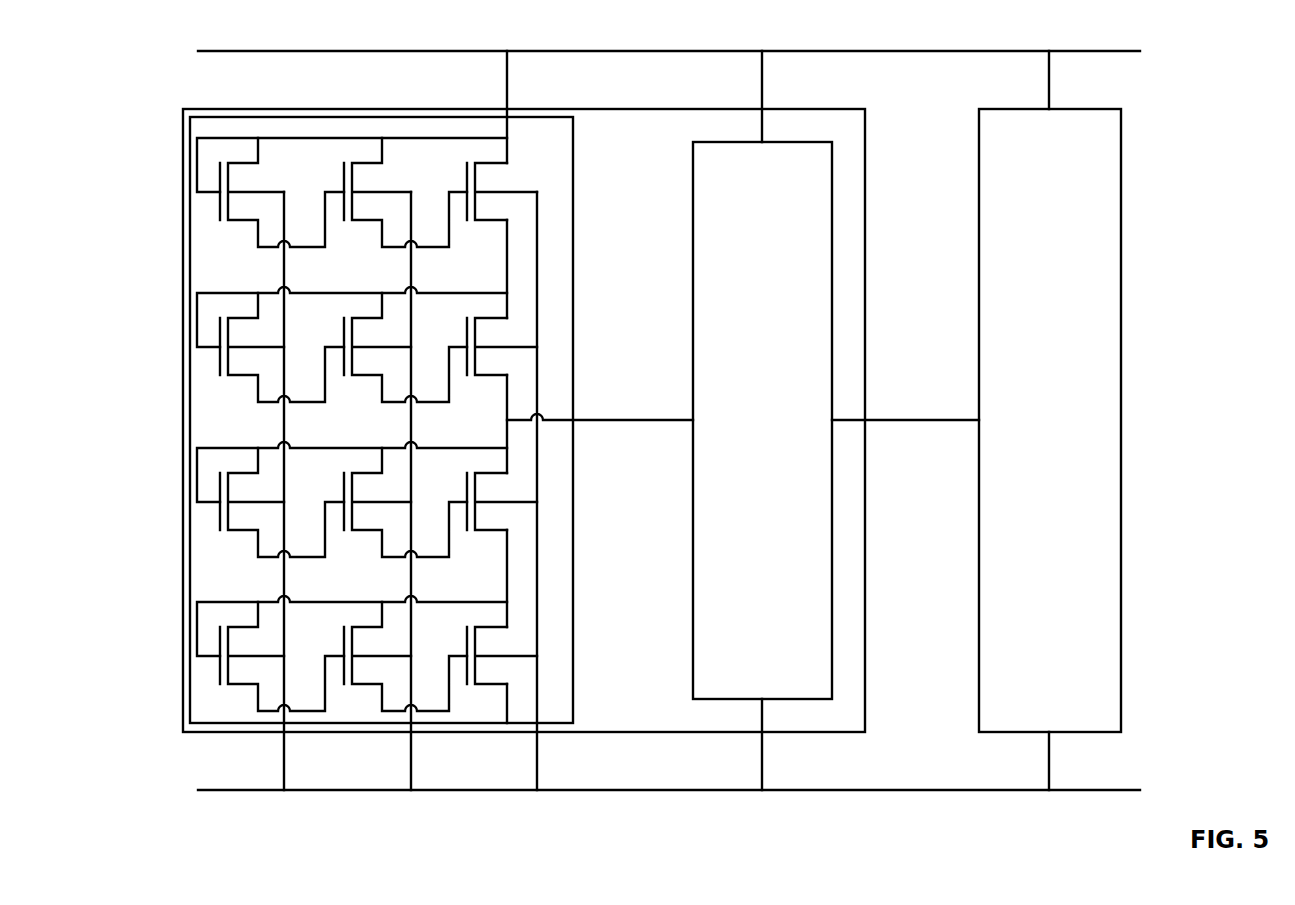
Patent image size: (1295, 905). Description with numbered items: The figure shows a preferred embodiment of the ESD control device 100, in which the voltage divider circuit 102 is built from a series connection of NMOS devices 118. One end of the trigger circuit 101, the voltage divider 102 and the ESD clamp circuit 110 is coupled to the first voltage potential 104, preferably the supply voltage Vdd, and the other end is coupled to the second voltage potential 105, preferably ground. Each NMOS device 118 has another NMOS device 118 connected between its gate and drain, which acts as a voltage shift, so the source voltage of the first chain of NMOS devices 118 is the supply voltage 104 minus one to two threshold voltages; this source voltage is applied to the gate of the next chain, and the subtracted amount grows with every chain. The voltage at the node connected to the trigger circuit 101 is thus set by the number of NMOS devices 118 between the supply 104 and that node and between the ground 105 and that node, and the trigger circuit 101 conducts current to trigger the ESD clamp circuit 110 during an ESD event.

The ESD control device 100 is at (412, 109).
The trigger circuit 101 is at (783, 432).
The voltage divider circuit 102 is at (191, 167).
The first voltage potential 104 is at (690, 51).
The second voltage potential 105 is at (658, 790).
The ESD clamp circuit 110 is at (1071, 432).
The NMOS device 118 is at (241, 190).